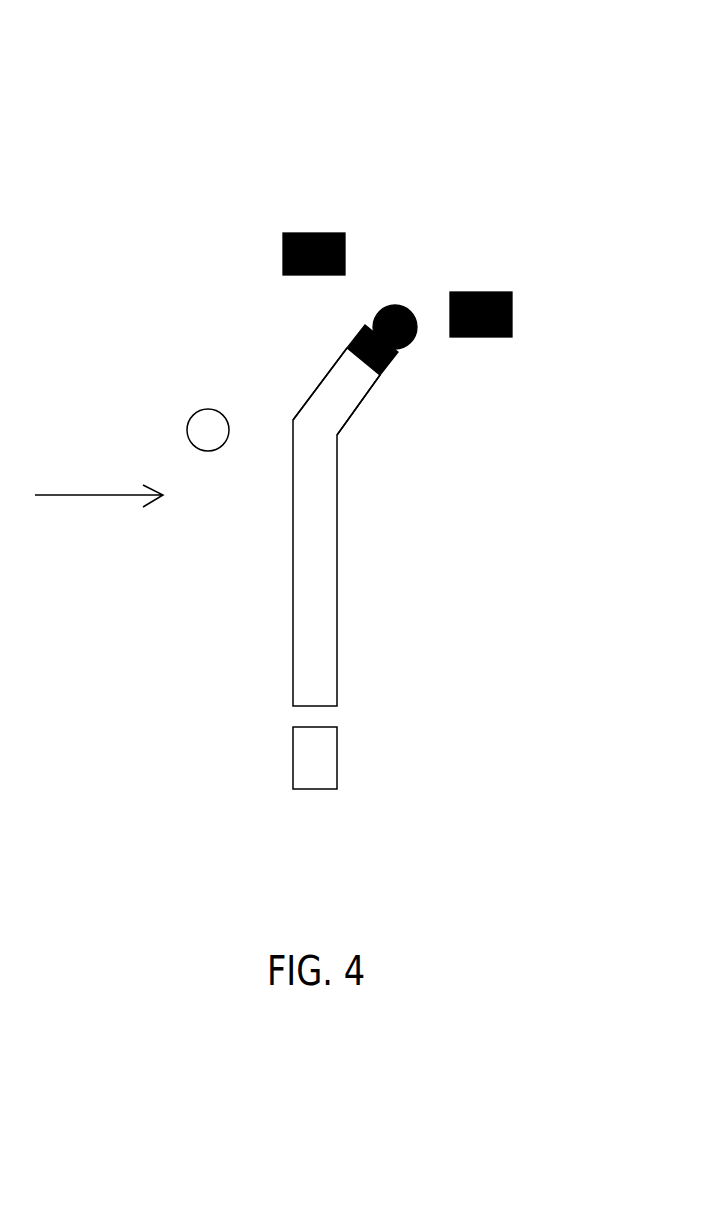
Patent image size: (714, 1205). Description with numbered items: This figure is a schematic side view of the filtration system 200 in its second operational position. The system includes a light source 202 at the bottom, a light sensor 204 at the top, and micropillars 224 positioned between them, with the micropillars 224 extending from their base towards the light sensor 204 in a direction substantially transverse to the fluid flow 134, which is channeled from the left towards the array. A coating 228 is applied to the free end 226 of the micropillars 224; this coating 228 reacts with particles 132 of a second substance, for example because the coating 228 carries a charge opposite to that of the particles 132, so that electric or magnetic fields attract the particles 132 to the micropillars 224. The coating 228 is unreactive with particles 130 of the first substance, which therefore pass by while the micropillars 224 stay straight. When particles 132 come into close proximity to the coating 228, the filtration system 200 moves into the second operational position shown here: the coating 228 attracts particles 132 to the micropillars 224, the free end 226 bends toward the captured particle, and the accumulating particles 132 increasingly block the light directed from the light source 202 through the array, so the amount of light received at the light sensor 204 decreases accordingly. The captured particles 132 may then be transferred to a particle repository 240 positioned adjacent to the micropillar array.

The filtration system 200 is at (253, 87).
The light sensor 204 is at (345, 253).
The particle repository 240 is at (512, 313).
The micropillars 224 is at (337, 622).
The free end 226 is at (396, 420).
The coating 228 is at (358, 336).
The particles 132 is at (402, 348).
The light source 202 is at (337, 758).
The particles 130 is at (208, 408).
The fluid flow 134 is at (98, 495).